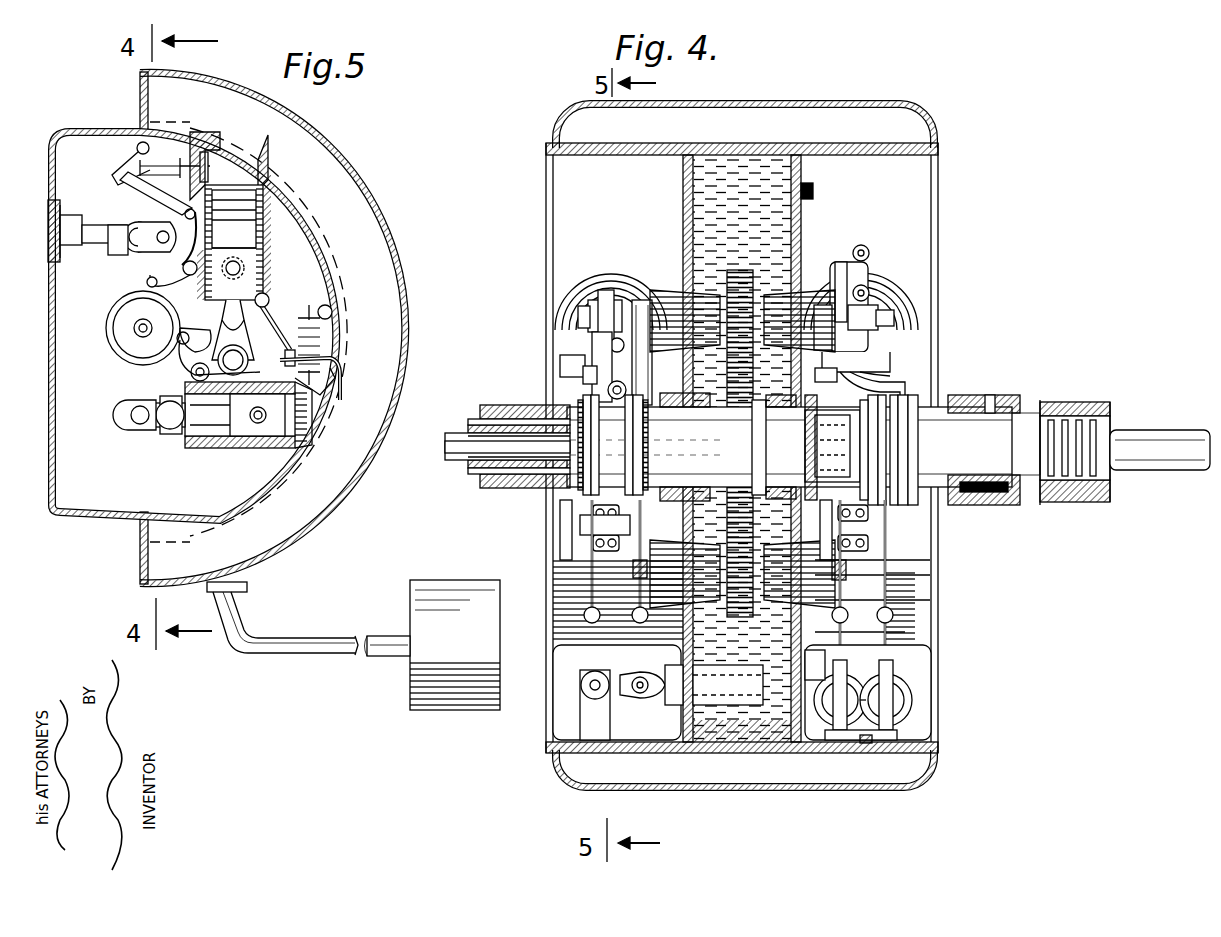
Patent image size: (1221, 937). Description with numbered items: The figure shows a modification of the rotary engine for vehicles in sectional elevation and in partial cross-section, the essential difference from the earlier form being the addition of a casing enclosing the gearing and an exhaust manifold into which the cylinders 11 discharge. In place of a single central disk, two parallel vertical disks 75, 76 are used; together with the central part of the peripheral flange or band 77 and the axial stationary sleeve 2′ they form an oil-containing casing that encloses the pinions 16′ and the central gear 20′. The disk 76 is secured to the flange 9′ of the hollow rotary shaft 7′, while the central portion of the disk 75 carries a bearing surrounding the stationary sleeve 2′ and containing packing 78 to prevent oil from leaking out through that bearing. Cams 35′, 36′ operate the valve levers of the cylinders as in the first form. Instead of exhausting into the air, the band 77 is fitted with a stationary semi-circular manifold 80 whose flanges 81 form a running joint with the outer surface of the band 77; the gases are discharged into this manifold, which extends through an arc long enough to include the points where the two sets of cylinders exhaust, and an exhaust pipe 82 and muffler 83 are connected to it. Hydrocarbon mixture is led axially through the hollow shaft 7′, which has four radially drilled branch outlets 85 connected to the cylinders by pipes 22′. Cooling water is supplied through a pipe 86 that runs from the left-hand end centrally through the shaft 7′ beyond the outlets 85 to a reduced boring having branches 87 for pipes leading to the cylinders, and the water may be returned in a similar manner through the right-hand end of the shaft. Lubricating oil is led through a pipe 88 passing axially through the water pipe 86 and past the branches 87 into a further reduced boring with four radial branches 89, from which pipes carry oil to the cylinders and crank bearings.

In FIG. 4, the axial stationary sleeve 2′ is at (520, 404).
In FIG. 4, the hollow rotary shaft 7′ is at (500, 404).
In FIG. 4, the flange of the rotary shaft 9′ is at (813, 446).
In FIG. 5, the cylinder 11 is at (262, 226).
In FIG. 4, the cylinder 11 is at (620, 275).
In FIG. 4, the pinions 16′ is at (745, 275).
In FIG. 4, the central gear 20′ is at (738, 437).
In FIG. 4, the pipes 22′ is at (908, 632).
In FIG. 4, the cam 35′ is at (595, 440).
In FIG. 4, the cam 36′ is at (630, 462).
In FIG. 4, the vertical disk 75 is at (683, 206).
In FIG. 4, the vertical disk 76 is at (800, 246).
In FIG. 4, the peripheral flange or band 77 is at (772, 143).
In FIG. 4, the packing 78 is at (680, 395).
In FIG. 5, the stationary semi-circular manifold 80 is at (394, 268).
In FIG. 4, the stationary semi-circular manifold 80 is at (917, 108).
In FIG. 4, the flanges 81 is at (553, 142).
In FIG. 5, the exhaust pipe 82 is at (314, 658).
In FIG. 5, the muffler 83 is at (452, 703).
In FIG. 4, the branch outlets 85 is at (905, 495).
In FIG. 4, the water pipe 86 is at (470, 434).
In FIG. 4, the water branches 87 is at (905, 410).
In FIG. 4, the oil pipe 88 is at (455, 444).
In FIG. 4, the radial oil branches 89 is at (885, 405).